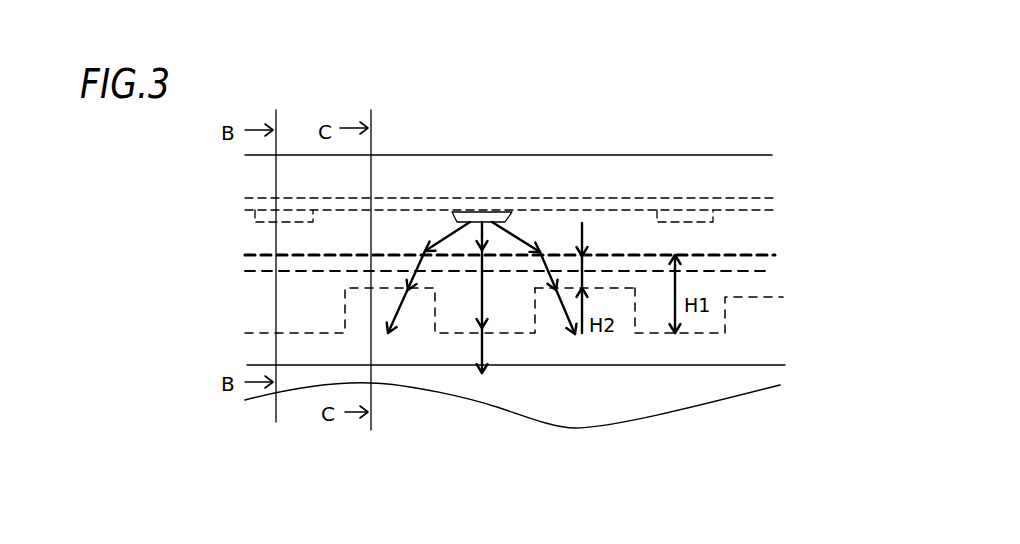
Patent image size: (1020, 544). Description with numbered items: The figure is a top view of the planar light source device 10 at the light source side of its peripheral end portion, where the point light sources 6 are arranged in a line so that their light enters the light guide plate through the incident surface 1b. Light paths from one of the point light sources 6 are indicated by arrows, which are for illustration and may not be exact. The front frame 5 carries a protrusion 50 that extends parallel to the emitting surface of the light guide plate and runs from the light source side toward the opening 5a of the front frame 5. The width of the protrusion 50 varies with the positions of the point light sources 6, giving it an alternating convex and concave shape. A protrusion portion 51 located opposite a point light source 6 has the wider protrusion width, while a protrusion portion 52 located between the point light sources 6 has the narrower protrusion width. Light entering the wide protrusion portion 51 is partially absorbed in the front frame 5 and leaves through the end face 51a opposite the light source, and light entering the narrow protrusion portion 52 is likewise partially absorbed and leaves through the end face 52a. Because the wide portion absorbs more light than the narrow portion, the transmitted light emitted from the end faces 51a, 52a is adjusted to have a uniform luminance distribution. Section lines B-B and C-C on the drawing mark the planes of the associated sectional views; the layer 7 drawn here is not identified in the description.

The front frame 5 is at (455, 160).
The opening 5a is at (742, 390).
The point light source 6 is at (483, 198).
The optical sheet 7 is at (547, 198).
The protrusion 50 is at (767, 95).
The protrusion portion 51 is at (650, 300).
The end face 51a is at (692, 335).
The protrusion portion 52 is at (597, 277).
The end face 52a is at (542, 290).
The incident surface 1b is at (760, 273).
The planar light source device 10 is at (325, 452).